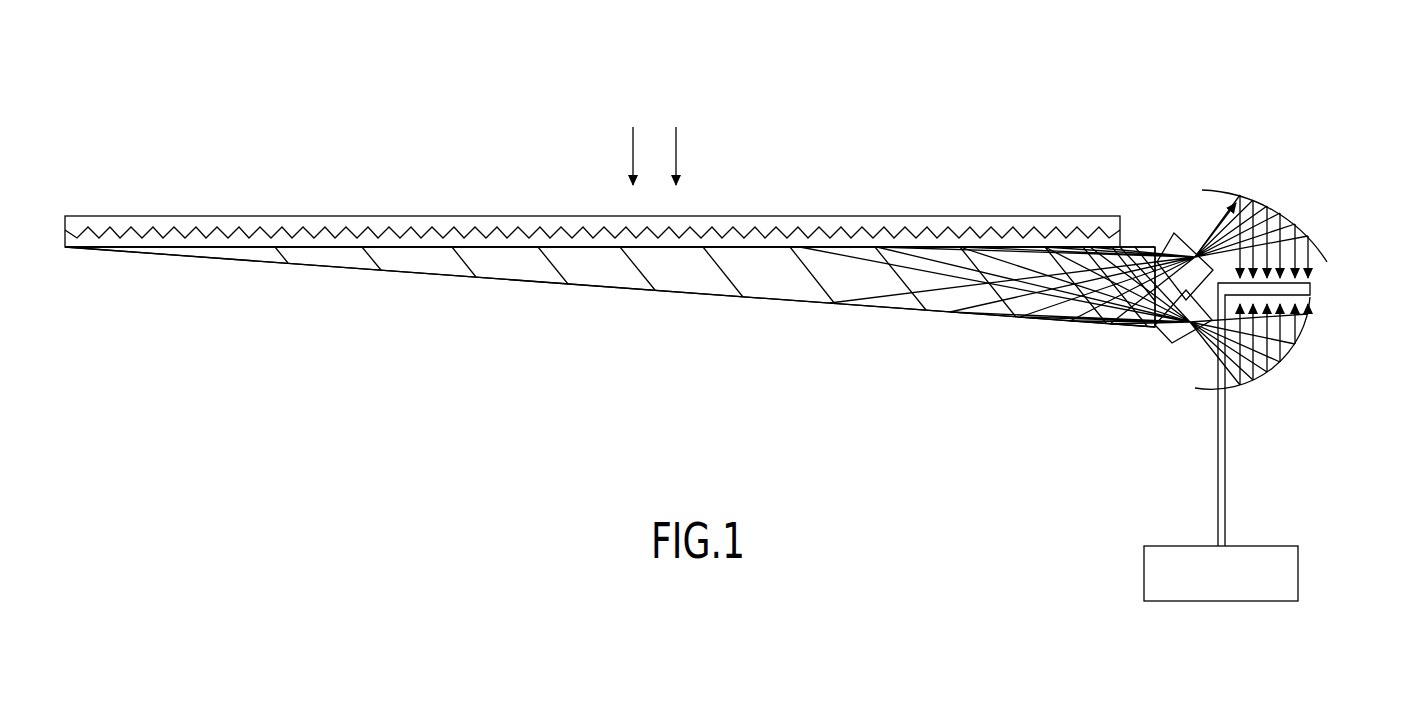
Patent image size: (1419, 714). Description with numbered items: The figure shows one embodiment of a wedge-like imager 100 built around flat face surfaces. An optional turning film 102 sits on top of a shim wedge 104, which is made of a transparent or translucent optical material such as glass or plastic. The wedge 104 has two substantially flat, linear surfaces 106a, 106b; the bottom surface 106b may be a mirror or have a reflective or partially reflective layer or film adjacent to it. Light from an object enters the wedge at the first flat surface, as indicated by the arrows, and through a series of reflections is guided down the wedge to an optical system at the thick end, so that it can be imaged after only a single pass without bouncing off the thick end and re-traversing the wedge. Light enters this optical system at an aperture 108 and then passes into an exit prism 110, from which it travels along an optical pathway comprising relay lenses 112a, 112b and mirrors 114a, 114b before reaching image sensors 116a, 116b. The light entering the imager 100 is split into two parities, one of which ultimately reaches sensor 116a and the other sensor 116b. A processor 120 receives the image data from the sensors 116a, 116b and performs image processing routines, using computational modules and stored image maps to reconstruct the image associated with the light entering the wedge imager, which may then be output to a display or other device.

The wedge-like imager 100 is at (962, 100).
The turning film 102 is at (237, 216).
The shim wedge 104 is at (277, 263).
The flat surface 106a is at (318, 247).
The bottom surface 106b is at (423, 273).
The aperture 108 is at (1160, 248).
The exit prism 110 is at (1153, 326).
The relay lens 112a is at (1183, 233).
The relay lens 112b is at (1187, 343).
The mirror 114a is at (1250, 200).
The mirror 114b is at (1273, 375).
The image sensor 116a is at (1313, 287).
The image sensor 116b is at (1307, 296).
The processor 120 is at (1220, 602).